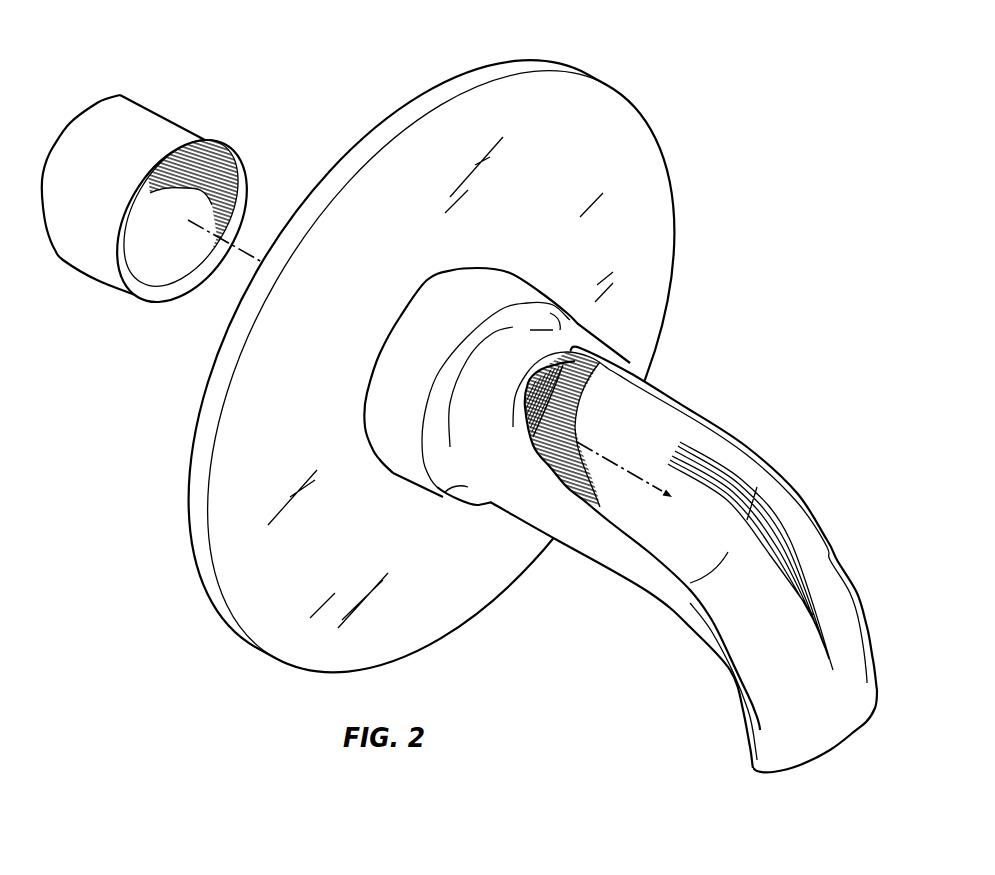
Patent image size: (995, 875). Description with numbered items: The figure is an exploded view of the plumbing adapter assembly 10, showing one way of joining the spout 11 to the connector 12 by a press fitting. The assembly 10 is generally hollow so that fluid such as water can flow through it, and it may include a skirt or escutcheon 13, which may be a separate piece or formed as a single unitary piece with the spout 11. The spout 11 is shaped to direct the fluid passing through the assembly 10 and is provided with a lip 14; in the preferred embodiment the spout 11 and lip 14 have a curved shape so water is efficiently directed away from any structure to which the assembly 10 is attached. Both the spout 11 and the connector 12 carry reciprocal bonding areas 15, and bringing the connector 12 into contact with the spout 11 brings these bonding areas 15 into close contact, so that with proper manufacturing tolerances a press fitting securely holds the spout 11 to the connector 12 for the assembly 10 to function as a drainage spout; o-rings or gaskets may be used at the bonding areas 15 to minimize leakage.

The assembly 10 is at (790, 233).
The spout 11 is at (643, 460).
The connector 12 is at (123, 108).
The escutcheon 13 is at (642, 185).
The lip 14 is at (808, 708).
The reciprocal bonding areas 15 is at (107, 255).